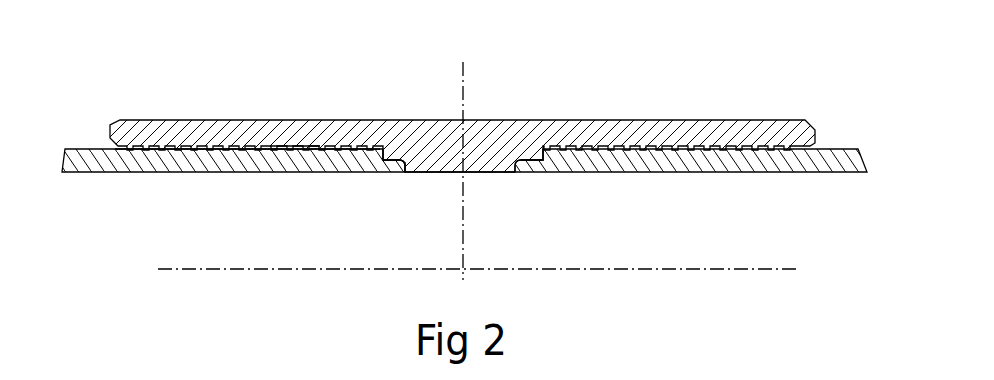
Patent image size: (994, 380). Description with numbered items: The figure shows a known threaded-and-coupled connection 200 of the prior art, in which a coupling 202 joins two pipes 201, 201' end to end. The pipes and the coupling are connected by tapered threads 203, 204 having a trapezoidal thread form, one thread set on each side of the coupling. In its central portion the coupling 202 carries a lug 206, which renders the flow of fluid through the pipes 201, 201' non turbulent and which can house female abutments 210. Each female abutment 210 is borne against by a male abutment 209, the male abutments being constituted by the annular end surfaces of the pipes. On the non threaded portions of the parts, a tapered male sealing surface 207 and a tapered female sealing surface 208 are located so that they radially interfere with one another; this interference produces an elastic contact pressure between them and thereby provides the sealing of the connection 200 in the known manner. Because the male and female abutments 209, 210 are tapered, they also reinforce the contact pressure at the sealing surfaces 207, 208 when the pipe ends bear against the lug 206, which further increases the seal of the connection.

The T & C connection 200 is at (464, 140).
The pipe 201 is at (233, 207).
The pipe 201' is at (691, 207).
The coupling 202 is at (265, 135).
The tapered thread 203 is at (263, 150).
The tapered thread 204 is at (291, 147).
The lug 206 is at (487, 158).
The male sealing surface 207 is at (398, 168).
The female sealing surface 208 is at (392, 168).
The male abutment 209 is at (408, 160).
The female abutment 210 is at (396, 168).